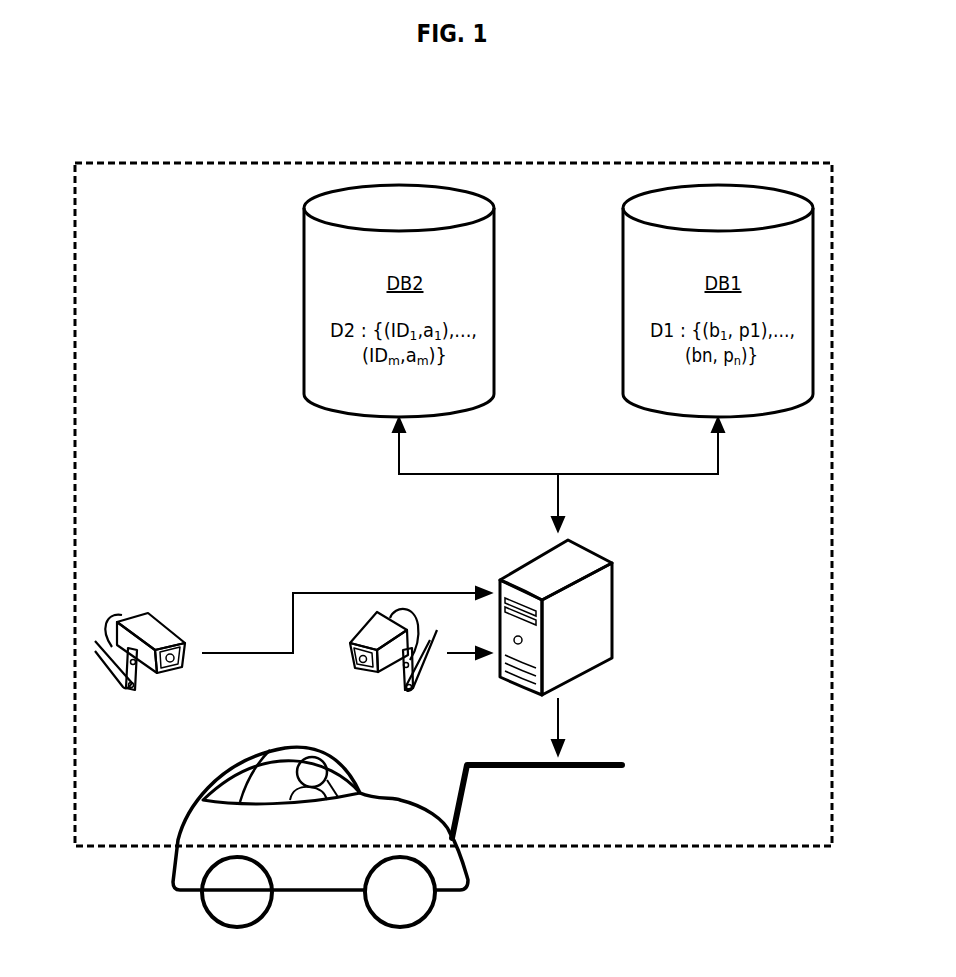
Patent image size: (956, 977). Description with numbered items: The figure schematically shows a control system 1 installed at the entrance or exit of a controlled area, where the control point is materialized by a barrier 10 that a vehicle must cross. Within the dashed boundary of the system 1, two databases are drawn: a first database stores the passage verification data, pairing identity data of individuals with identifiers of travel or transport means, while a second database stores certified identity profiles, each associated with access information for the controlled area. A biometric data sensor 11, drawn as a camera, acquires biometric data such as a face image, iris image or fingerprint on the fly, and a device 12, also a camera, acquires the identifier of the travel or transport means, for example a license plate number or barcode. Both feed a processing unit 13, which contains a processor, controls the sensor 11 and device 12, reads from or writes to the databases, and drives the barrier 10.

The control system 1 is at (452, 163).
The barrier 10 is at (590, 752).
The biometric data sensor 11 is at (345, 668).
The device for acquiring an identifier of a travel or transport means 12 is at (170, 620).
The processing unit 13 is at (615, 613).